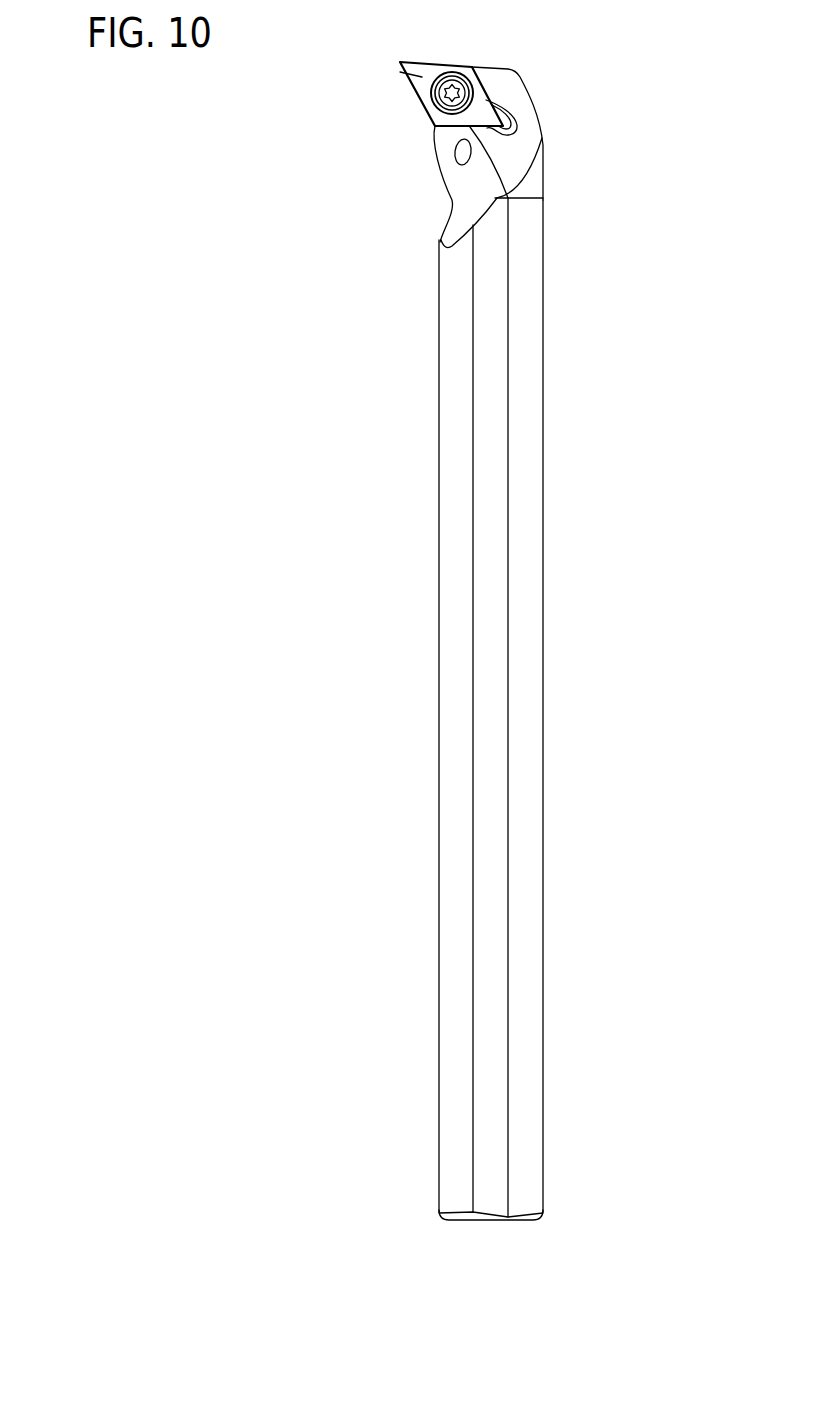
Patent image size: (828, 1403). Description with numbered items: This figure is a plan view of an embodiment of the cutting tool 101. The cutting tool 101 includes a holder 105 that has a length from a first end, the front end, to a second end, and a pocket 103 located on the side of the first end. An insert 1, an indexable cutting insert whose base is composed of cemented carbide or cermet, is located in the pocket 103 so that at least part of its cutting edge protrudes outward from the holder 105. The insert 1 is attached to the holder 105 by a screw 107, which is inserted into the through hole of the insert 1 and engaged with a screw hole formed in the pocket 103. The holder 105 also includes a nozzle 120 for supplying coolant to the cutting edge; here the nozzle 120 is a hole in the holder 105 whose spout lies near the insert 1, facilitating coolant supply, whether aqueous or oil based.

The insert 1 is at (398, 66).
The cutting tool 101 is at (337, 243).
The pocket 103 is at (452, 93).
The holder 105 is at (493, 480).
The screw 107 is at (475, 94).
The nozzle 120 is at (455, 155).